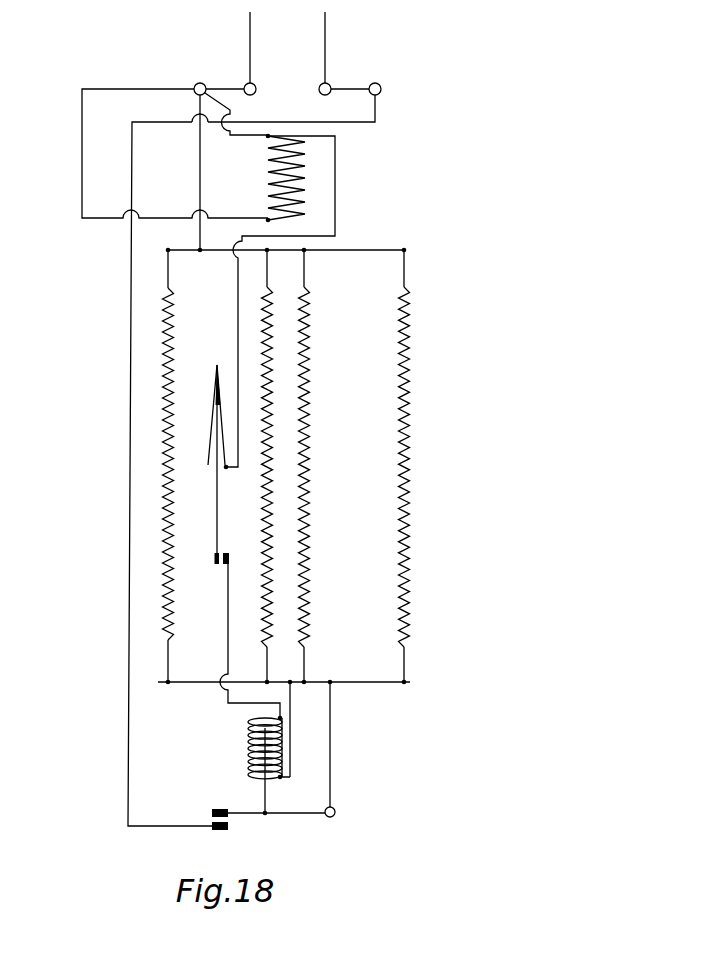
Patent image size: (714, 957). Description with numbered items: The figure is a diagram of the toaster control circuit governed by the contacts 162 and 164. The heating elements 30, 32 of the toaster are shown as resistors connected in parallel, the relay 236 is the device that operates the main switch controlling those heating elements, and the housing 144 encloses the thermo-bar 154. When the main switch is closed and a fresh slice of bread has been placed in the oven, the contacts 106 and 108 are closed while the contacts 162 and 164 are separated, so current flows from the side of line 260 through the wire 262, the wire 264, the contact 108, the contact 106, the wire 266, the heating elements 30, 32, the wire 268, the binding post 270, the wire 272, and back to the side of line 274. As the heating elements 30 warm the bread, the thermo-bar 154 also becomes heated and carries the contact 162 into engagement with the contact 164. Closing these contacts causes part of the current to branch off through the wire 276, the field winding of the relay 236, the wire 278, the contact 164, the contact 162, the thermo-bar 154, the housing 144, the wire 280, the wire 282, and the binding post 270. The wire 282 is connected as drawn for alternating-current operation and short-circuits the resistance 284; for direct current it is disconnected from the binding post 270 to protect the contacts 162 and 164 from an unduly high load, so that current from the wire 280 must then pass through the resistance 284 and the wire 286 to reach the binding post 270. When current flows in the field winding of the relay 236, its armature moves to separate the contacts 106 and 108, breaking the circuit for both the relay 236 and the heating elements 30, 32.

The binding post 270 is at (203, 83).
The wire 272 is at (223, 88).
The side of line 274 is at (251, 50).
The side of line 260 is at (326, 56).
The wire 262 is at (363, 89).
The wire 264 is at (128, 465).
The wire 286 is at (82, 173).
The wire 268 is at (201, 189).
The wire 282 is at (252, 138).
The resistance 284 is at (300, 201).
The wire 280 is at (238, 301).
The heating element 30 is at (168, 397).
The heating element 32 is at (304, 442).
The housing 144 is at (209, 398).
The thermo-bar 154 is at (217, 509).
The contact 162 is at (219, 551).
The contact 164 is at (226, 568).
The wire 278 is at (228, 657).
The relay 236 is at (241, 771).
The wire 276 is at (290, 743).
The wire 266 is at (331, 767).
The contact 106 is at (230, 814).
The contact 108 is at (226, 832).